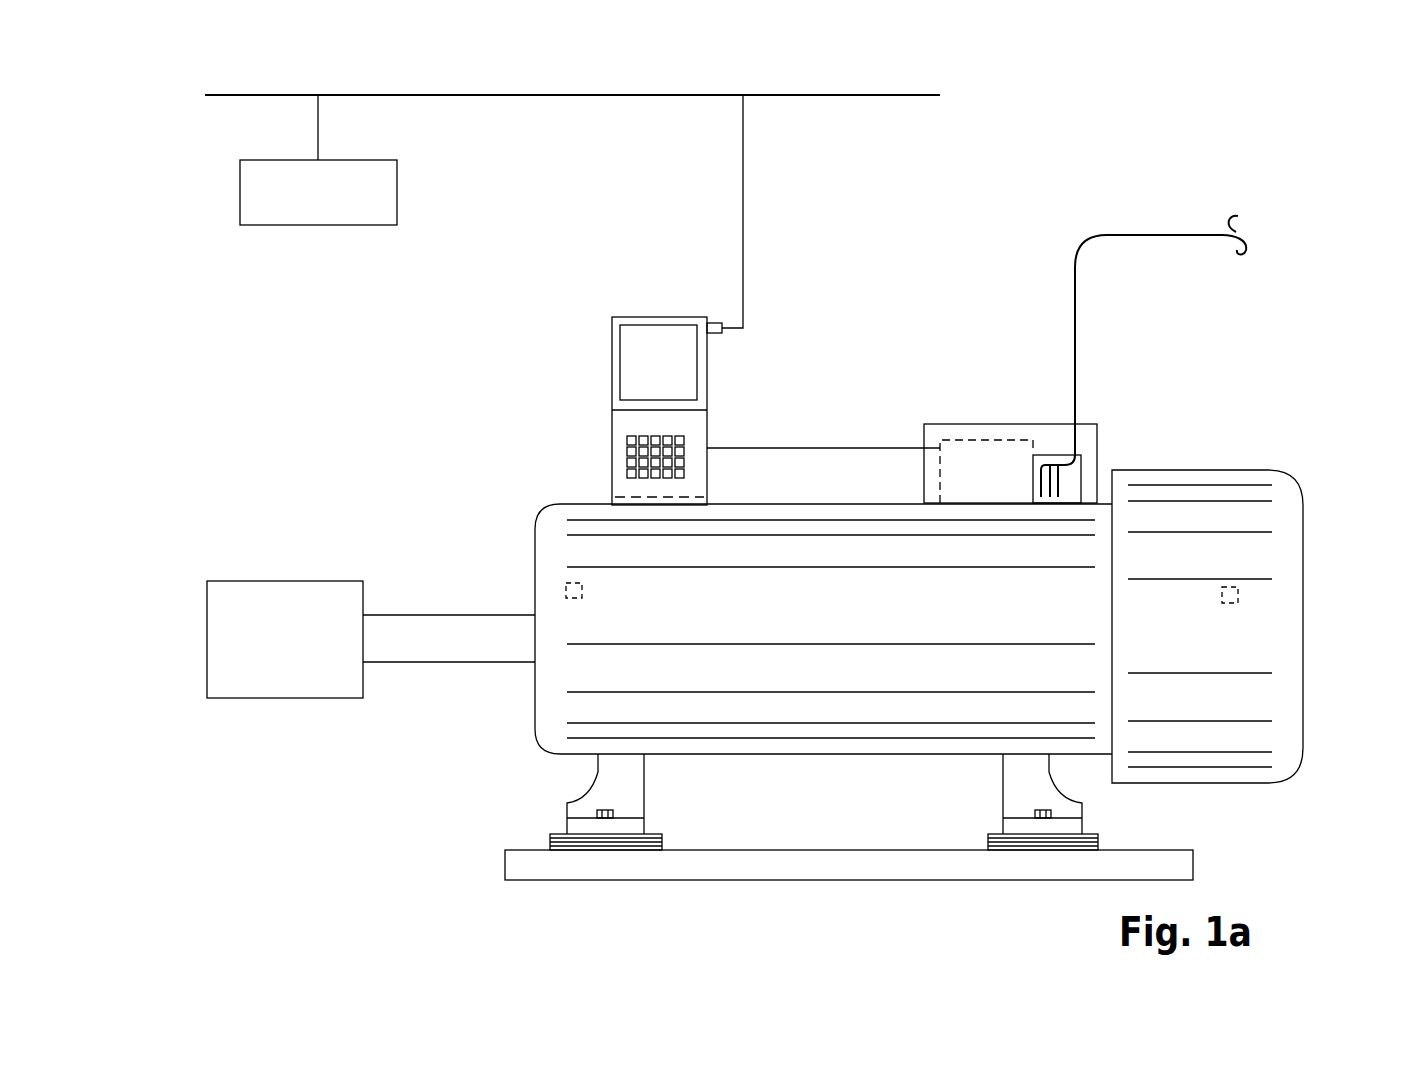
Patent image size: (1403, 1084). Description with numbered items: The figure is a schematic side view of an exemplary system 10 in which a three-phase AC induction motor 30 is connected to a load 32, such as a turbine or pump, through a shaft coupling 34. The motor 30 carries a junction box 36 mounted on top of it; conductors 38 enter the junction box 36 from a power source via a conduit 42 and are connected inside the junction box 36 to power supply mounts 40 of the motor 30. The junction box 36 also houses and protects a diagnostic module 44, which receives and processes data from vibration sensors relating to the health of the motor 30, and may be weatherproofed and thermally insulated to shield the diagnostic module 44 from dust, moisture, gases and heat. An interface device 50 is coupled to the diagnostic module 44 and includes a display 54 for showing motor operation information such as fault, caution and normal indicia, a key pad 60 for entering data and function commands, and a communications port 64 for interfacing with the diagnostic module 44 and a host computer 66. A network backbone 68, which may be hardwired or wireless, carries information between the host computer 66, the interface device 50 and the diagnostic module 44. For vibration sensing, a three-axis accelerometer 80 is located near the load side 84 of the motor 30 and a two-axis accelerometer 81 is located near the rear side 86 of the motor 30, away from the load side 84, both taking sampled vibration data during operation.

The system 10 is at (345, 508).
The three-phase AC induction motor 30 is at (553, 708).
The load 32 is at (317, 698).
The shaft coupling 34 is at (395, 630).
The junction box 36 is at (955, 424).
The conductors 38 is at (1072, 482).
The power supply mounts 40 is at (1065, 452).
The conduit 42 is at (1208, 233).
The diagnostic module 44 is at (1005, 440).
The interface device 50 is at (657, 317).
The display 54 is at (643, 357).
The key pad 60 is at (603, 427).
The communications port 64 is at (713, 322).
The host computer 66 is at (397, 182).
The network backbone 68 is at (568, 96).
The three-axis accelerometer 80 is at (565, 582).
The two-axis accelerometer 81 is at (1239, 592).
The load side 84 is at (470, 568).
The rear side 86 is at (1272, 797).